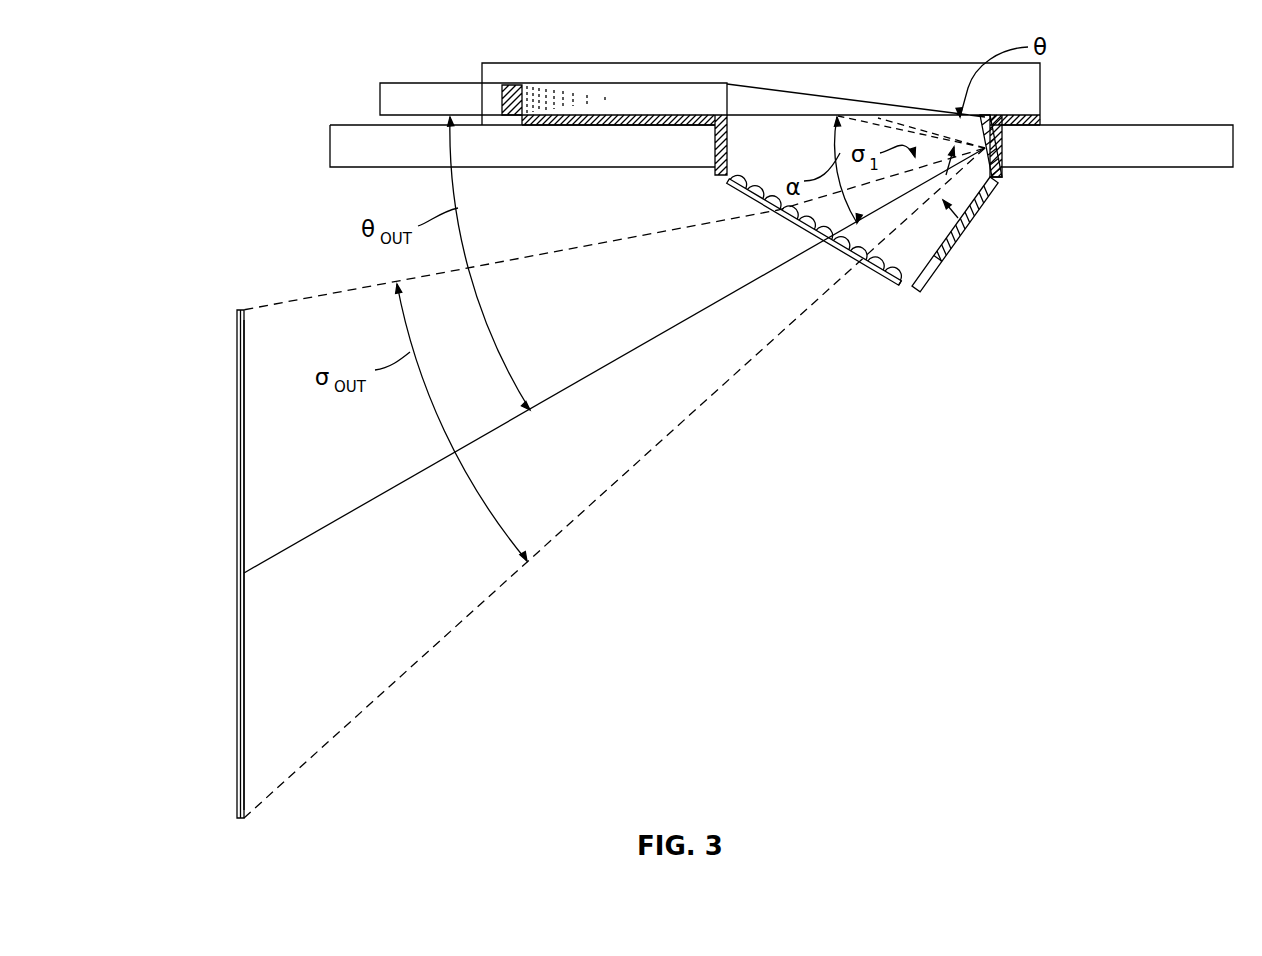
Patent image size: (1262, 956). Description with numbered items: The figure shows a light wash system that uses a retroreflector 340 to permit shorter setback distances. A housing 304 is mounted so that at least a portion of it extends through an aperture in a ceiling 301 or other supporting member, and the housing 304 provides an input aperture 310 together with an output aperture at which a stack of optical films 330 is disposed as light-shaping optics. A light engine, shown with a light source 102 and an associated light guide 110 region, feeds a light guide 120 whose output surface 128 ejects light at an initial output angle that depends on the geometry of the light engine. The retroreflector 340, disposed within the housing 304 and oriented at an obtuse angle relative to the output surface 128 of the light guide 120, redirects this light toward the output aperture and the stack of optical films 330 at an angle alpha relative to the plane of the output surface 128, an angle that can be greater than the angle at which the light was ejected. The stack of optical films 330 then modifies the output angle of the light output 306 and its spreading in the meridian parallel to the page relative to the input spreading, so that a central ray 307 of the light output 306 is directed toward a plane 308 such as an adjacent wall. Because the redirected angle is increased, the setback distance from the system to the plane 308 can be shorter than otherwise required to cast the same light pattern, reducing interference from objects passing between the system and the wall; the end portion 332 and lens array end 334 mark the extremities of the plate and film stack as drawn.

The light source 102 is at (513, 85).
The light guide 110 is at (592, 92).
The light guide 120 is at (808, 105).
The output surface 128 is at (757, 112).
The ceiling 301 is at (1170, 125).
The housing 304 is at (970, 214).
The light output 306 is at (248, 300).
The central output ray 307 is at (356, 508).
The plane 308 is at (245, 663).
The input aperture 310 is at (782, 118).
The stack of optical films 330 is at (732, 193).
The plate end portion 332 is at (920, 284).
The lens array end 334 is at (900, 284).
The retroreflector 340 is at (1008, 125).